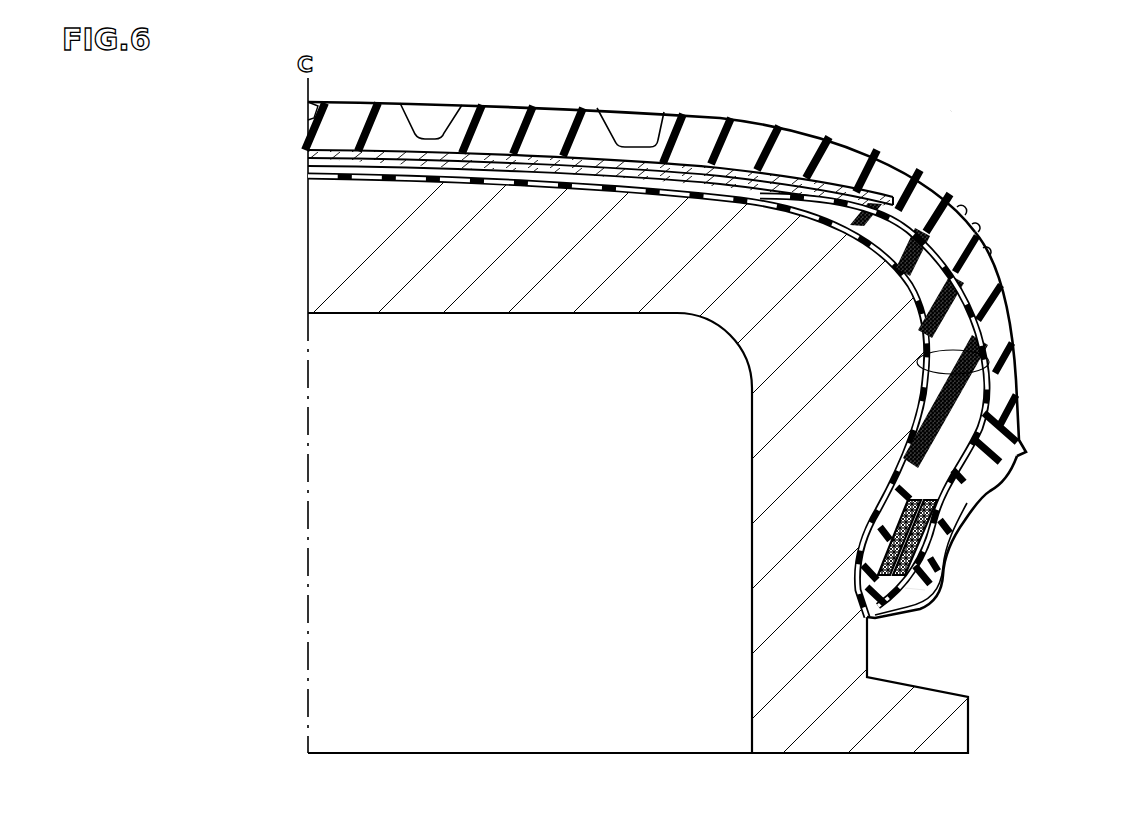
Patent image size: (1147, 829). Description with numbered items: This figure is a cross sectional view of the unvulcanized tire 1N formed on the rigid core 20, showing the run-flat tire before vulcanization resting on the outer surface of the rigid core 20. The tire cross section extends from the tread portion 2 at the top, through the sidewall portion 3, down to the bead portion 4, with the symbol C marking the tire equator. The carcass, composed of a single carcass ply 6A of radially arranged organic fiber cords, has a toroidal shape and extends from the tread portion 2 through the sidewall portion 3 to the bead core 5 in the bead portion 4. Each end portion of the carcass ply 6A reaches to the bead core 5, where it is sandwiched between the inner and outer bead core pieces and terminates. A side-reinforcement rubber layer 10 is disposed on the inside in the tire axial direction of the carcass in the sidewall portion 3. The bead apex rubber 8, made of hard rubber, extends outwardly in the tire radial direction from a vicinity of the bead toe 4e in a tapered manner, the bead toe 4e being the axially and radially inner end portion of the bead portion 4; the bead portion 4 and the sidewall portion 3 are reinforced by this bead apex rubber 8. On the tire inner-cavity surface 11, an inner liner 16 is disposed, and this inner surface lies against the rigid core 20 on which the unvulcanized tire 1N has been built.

The unvulcanized tire 1N is at (948, 112).
The tread portion 2 is at (733, 112).
The sidewall portion 3 is at (1015, 298).
The bead portion 4 is at (950, 539).
The bead toe 4e is at (870, 622).
The bead core 5 is at (940, 502).
The carcass ply 6A is at (908, 215).
The bead apex rubber 8 is at (920, 583).
The side-reinforcement rubber layer 10 is at (932, 277).
The tire inner-cavity surface 11 is at (989, 363).
The inner liner 16 is at (928, 330).
The rigid core 20 is at (516, 283).